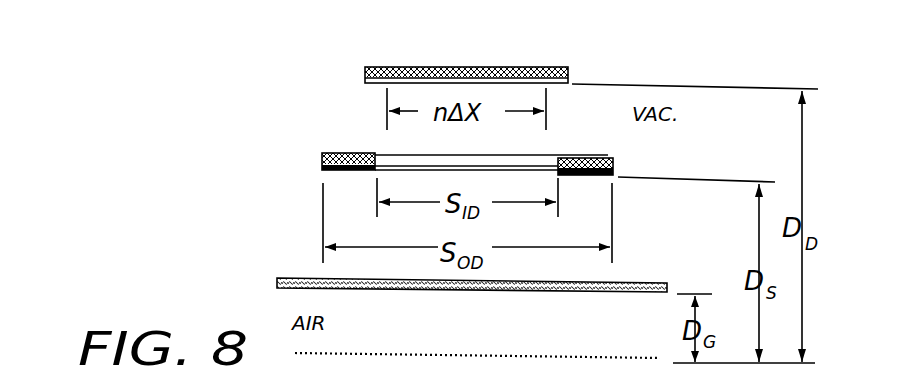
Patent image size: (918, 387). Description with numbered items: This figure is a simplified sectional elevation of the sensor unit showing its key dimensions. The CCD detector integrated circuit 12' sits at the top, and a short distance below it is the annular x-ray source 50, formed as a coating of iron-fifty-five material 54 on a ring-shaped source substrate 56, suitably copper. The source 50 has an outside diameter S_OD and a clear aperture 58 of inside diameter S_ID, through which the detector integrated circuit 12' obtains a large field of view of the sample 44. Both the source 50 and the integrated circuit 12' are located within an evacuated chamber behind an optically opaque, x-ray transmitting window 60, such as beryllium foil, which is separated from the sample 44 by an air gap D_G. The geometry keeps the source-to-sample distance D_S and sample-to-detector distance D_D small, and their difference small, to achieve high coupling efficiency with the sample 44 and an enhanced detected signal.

The CCD detector integrated circuit 12' is at (484, 60).
The x-ray source 50 is at (369, 172).
The clear aperture 58 is at (549, 156).
The source substrate 56 is at (607, 158).
The 55Fe material 54 is at (599, 176).
The window 60 is at (609, 293).
The sample 44 is at (424, 326).